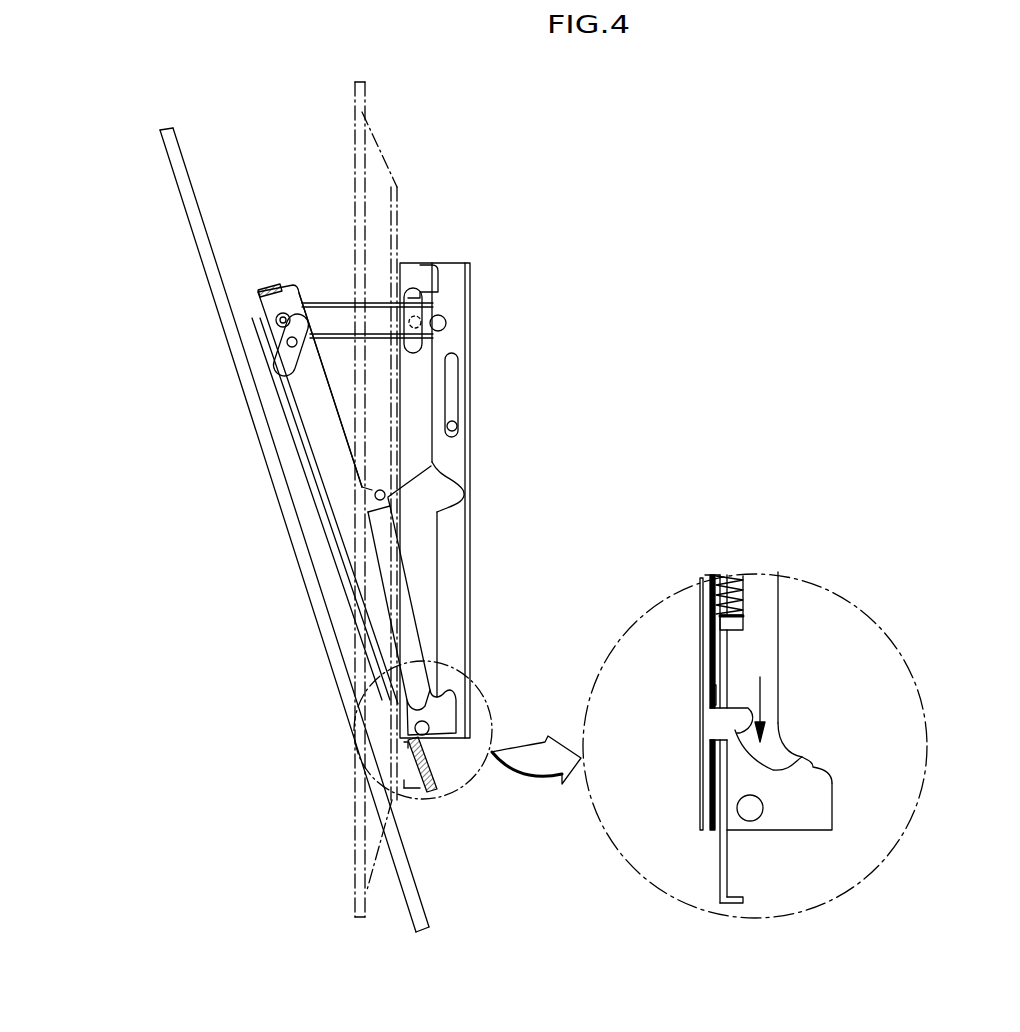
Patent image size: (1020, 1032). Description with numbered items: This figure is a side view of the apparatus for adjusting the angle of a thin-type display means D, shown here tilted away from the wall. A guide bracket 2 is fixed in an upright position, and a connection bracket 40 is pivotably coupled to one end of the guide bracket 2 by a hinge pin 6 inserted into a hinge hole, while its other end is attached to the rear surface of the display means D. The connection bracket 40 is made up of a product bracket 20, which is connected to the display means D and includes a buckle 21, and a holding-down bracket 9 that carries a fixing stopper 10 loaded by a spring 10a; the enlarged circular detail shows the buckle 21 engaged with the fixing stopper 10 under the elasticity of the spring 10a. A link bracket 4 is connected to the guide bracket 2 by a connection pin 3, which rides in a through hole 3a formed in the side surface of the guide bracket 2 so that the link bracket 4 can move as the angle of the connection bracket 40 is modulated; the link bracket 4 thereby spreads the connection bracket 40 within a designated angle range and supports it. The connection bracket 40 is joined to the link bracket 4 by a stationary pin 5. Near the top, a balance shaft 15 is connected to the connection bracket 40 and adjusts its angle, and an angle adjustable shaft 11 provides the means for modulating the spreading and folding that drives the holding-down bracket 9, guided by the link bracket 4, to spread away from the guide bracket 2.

The display means D is at (222, 234).
The guide bracket 2 is at (455, 655).
The connection pin 3 is at (455, 424).
The through hole 3a is at (453, 382).
The link bracket 4 is at (420, 452).
The stationary pin 5 is at (457, 507).
The hinge pin 6 is at (437, 748).
The holding-down bracket 9 is at (330, 457).
The fixing stopper 10 is at (433, 790).
The spring 10a is at (738, 590).
The angle adjustable shaft 11 is at (448, 323).
The balance shaft 15 is at (290, 318).
The product bracket 20 is at (297, 433).
The buckle 21 is at (790, 767).
The connection bracket 40 is at (486, 148).